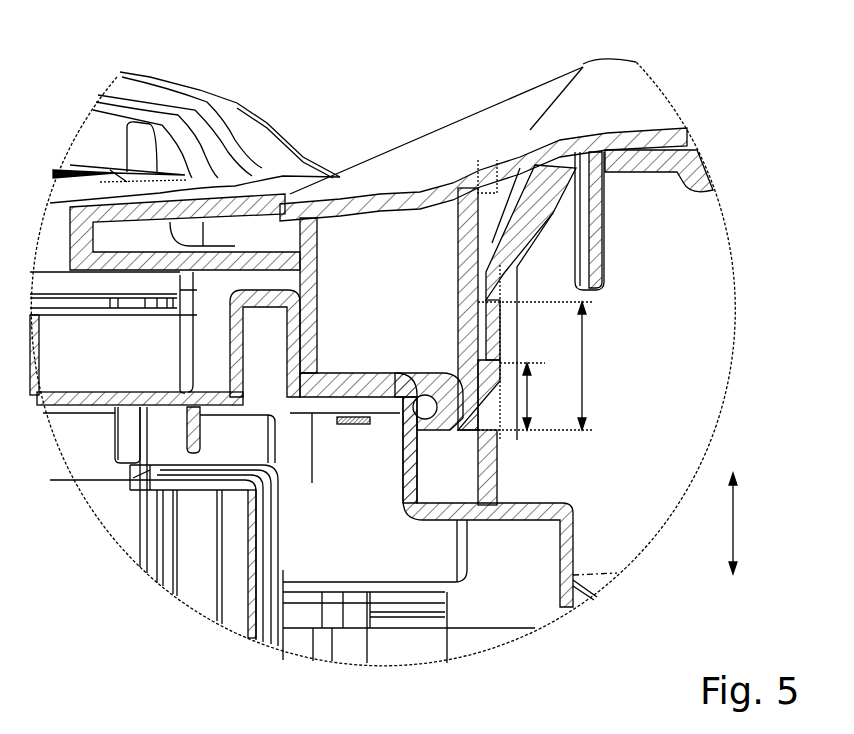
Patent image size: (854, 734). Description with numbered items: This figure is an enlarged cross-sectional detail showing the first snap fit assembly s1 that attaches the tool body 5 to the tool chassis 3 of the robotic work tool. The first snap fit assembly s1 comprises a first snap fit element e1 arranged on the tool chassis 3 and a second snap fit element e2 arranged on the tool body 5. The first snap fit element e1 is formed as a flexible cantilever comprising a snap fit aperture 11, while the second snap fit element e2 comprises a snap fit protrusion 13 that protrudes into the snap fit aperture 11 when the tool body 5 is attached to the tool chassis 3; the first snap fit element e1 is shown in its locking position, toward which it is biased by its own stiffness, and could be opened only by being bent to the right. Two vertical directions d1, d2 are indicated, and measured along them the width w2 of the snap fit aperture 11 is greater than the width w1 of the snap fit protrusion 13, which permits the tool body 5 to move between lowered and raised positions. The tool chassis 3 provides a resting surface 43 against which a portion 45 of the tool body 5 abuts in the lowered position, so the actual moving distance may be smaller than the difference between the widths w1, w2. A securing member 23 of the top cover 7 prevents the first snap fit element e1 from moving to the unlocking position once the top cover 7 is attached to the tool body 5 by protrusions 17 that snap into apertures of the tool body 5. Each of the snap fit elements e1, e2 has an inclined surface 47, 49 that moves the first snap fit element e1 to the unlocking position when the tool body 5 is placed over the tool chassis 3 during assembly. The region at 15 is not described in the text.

The tool chassis 3 is at (87, 482).
The tool body 5 is at (293, 178).
The top cover 7 is at (496, 138).
The snap fit aperture 11 is at (505, 318).
The snap fit protrusion 13 is at (493, 403).
The junction 15 is at (480, 311).
The protrusions 17 is at (479, 233).
The securing member 23 is at (597, 233).
The resting surface 43 is at (360, 405).
The portion of the tool body 45 is at (358, 388).
The inclined surface 47 is at (479, 193).
The inclined surface 49 is at (497, 398).
The first snap fit element e1 is at (509, 205).
The second snap fit element e2 is at (413, 483).
The first snap fit assembly s1 is at (537, 114).
The width of the snap fit protrusion w1 is at (527, 396).
The width of the snap fit aperture w2 is at (582, 367).
The direction d1 is at (733, 502).
The direction d2 is at (732, 547).